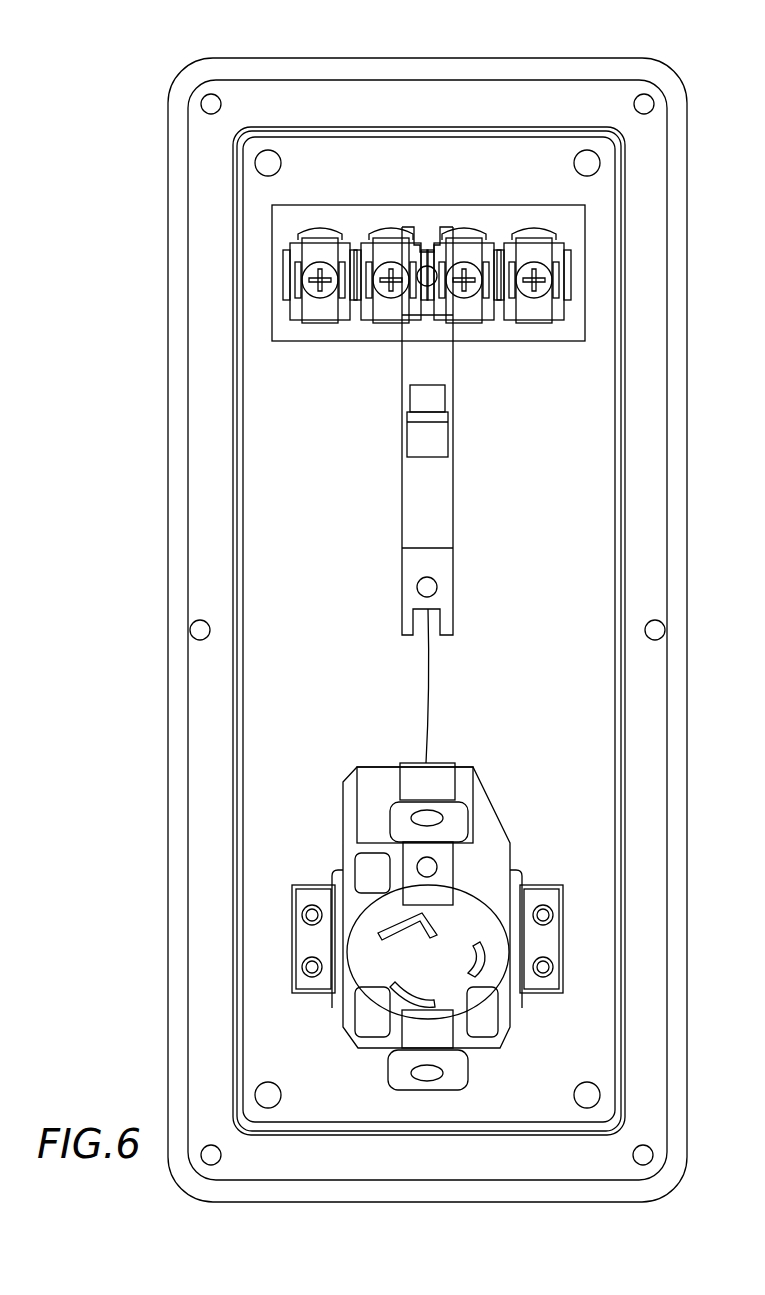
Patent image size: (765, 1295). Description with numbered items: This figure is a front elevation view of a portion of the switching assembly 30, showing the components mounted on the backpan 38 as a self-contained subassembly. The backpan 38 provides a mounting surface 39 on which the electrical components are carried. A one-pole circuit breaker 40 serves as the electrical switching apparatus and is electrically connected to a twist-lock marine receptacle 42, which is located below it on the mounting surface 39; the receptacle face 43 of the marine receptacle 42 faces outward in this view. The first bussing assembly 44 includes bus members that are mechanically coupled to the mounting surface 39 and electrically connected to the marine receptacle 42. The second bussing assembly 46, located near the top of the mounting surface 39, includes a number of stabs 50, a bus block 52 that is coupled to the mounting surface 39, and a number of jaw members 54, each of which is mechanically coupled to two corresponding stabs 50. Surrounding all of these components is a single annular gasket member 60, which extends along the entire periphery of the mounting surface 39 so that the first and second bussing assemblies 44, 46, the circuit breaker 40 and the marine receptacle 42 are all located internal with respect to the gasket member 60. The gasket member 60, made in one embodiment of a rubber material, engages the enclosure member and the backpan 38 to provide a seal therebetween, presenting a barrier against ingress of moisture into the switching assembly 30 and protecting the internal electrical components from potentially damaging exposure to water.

The switching assembly 30 is at (127, 108).
The backpan 38 is at (515, 68).
The mounting surface 39 is at (587, 550).
The one-pole circuit breaker 40 is at (438, 493).
The twist-lock marine receptacle 42 is at (377, 775).
The receptacle face 43 is at (453, 902).
The first bussing assembly 44 is at (548, 870).
The second bussing assembly 46 is at (555, 350).
The stabs 50 is at (297, 262).
The bus block 52 is at (392, 213).
The jaw members 54 is at (300, 326).
The gasket member 60 is at (608, 200).